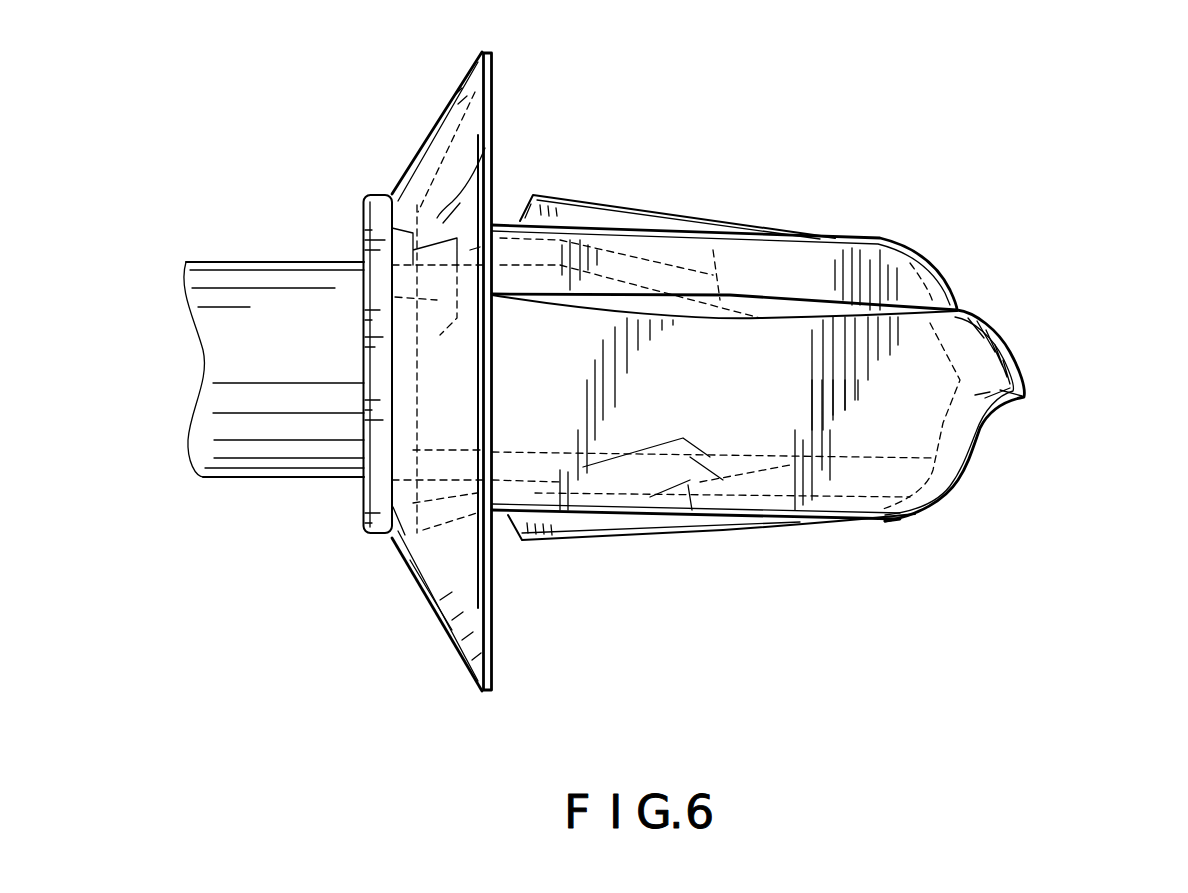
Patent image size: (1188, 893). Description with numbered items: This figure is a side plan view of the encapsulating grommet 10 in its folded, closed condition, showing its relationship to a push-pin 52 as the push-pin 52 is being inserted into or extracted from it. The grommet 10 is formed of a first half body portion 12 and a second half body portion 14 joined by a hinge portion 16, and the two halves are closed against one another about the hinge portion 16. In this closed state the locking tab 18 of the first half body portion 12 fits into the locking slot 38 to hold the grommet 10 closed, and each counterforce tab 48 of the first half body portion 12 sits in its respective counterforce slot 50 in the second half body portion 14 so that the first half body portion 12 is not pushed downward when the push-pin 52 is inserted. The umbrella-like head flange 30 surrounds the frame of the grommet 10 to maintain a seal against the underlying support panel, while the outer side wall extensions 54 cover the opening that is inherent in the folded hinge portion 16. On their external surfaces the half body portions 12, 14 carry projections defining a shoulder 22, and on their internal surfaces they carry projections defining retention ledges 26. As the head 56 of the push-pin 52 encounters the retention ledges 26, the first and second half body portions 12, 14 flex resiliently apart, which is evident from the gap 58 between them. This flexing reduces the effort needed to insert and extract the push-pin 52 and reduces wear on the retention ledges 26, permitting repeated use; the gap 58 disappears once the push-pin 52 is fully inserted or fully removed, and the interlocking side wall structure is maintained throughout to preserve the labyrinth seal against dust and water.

The encapsulating grommet 10 is at (897, 77).
The first half body portion 12 is at (937, 257).
The second half body portion 14 is at (947, 500).
The hinge portion 16 is at (1025, 393).
The locking tab 18 is at (502, 142).
The shoulder 22 is at (553, 197).
The retention ledge 26 is at (713, 270).
The head flange 30 is at (423, 597).
The locking slot 38 is at (370, 197).
The counterforce tab 48 is at (393, 296).
The counterforce slot 50 is at (443, 323).
The push-pin 52 is at (235, 370).
The extension 54 is at (1007, 337).
The head 56 is at (720, 352).
The gap 58 is at (595, 303).